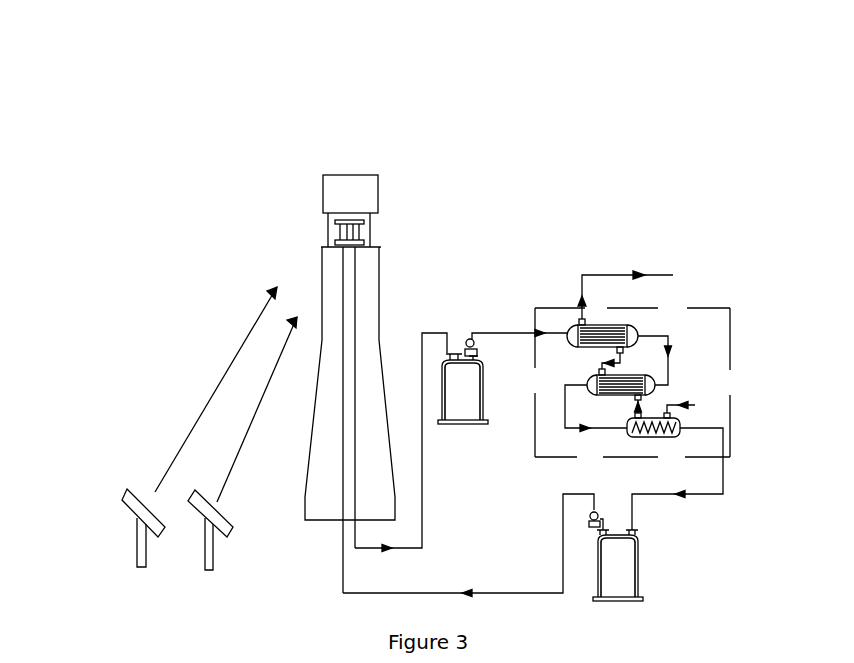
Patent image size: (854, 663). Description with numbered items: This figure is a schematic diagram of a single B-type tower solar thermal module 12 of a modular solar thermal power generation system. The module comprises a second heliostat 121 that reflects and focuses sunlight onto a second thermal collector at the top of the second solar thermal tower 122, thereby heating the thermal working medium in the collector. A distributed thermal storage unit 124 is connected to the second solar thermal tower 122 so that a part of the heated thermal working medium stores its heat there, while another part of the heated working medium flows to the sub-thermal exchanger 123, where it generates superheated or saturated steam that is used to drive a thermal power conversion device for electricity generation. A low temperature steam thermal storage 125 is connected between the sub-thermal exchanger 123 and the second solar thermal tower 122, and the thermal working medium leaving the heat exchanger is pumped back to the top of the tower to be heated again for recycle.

The B-type tower solar thermal module 12 is at (473, 73).
The second heliostat 121 is at (145, 510).
The second solar thermal tower 122 is at (330, 273).
The sub-thermal exchanger 123 is at (698, 307).
The distributed thermal storage unit 124 is at (463, 340).
The low temperature steam thermal storage 125 is at (628, 578).